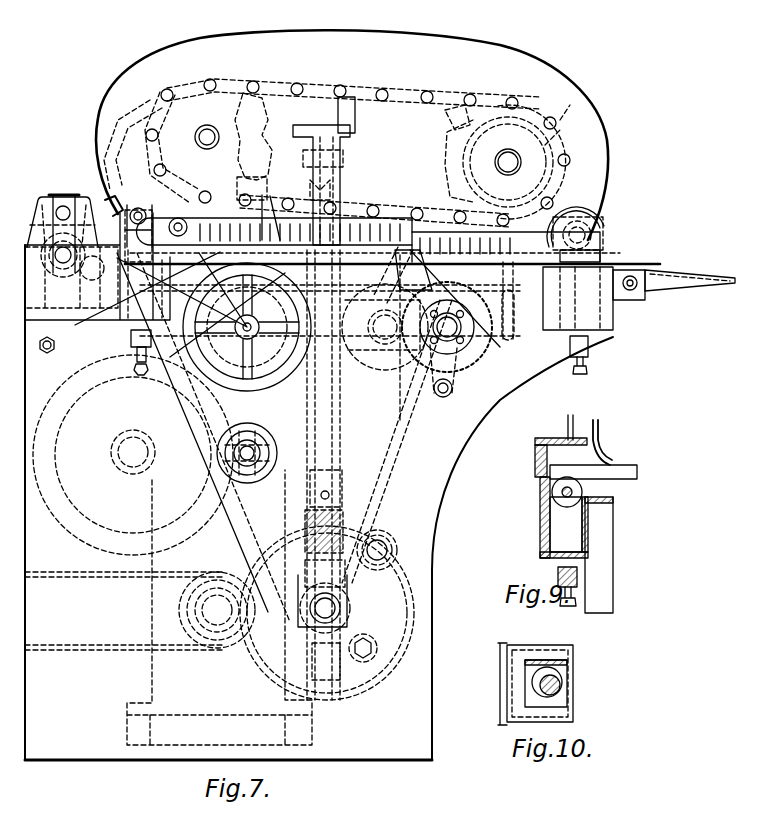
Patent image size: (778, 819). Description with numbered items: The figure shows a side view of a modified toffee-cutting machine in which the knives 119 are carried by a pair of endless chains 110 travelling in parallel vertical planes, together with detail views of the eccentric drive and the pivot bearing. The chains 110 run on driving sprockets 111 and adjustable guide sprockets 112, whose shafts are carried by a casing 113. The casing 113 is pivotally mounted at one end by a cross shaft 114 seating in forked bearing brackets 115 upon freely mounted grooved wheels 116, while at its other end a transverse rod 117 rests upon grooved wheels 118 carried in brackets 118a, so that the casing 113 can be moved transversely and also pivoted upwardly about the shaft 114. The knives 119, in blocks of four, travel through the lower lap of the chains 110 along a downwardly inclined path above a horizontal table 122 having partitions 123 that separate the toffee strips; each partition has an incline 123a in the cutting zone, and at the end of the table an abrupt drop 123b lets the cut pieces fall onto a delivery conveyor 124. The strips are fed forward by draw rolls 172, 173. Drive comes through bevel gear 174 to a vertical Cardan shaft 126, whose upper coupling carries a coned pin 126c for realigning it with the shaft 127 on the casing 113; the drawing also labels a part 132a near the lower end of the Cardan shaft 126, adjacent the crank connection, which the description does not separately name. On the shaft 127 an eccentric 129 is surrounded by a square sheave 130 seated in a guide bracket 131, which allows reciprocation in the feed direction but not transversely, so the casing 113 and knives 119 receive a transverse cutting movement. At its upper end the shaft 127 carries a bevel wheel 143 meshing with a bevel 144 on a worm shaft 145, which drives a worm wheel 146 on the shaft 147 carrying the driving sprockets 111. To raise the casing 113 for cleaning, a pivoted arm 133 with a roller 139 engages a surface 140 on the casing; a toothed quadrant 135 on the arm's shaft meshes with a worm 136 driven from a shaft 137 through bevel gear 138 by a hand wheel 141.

In FIG. 7, the endless chains 110 is at (170, 213).
In FIG. 7, the driving sprockets 111 is at (570, 105).
In FIG. 7, the guide sprockets 112 is at (155, 108).
In FIG. 7, the casing 113 is at (499, 57).
In FIG. 9, the casing 113 is at (568, 425).
In FIG. 7, the cross shaft 114 is at (600, 240).
In FIG. 9, the cross shaft 114 is at (622, 470).
In FIG. 7, the forked bearing brackets 115 is at (592, 222).
In FIG. 9, the forked bearing brackets 115 is at (545, 462).
In FIG. 7, the grooved wheels 116 is at (600, 270).
In FIG. 9, the grooved wheels 116 is at (553, 494).
In FIG. 7, the transverse rod 117 is at (138, 210).
In FIG. 7, the grooved wheels 118 is at (138, 201).
In FIG. 7, the brackets 118a is at (71, 339).
In FIG. 7, the knives 119 is at (275, 240).
In FIG. 7, the horizontal table 122 is at (393, 275).
In FIG. 7, the partitions or ramps 123 is at (265, 240).
In FIG. 7, the incline 123a is at (375, 240).
In FIG. 7, the abrupt drop 123b is at (437, 432).
In FIG. 7, the delivery conveyor 124 is at (665, 275).
In FIG. 7, the vertical Cardan shaft 126 is at (335, 425).
In FIG. 7, the upwardly extending pin 126c is at (335, 192).
In FIG. 7, the shaft 127 is at (335, 178).
In FIG. 10, the shaft 127 is at (560, 686).
In FIG. 10, the eccentric 129 is at (560, 674).
In FIG. 10, the square sheave 130 is at (565, 665).
In FIG. 10, the guide bracket 131 is at (528, 648).
In FIG. 7, the crank pin 132a is at (373, 517).
In FIG. 7, the pivoted arm 133 is at (155, 349).
In FIG. 7, the toothed quadrant 135 is at (335, 355).
In FIG. 7, the worm 136 is at (340, 385).
In FIG. 7, the shaft 137 is at (182, 437).
In FIG. 7, the bevel gear 138 is at (150, 403).
In FIG. 7, the roller 139 is at (190, 217).
In FIG. 7, the surface 140 is at (265, 373).
In FIG. 7, the hand wheel 141 is at (255, 357).
In FIG. 7, the bevel wheel 143 is at (340, 128).
In FIG. 7, the bevel 144 is at (345, 95).
In FIG. 7, the worm shaft 145 is at (455, 100).
In FIG. 7, the worm wheel 146 is at (557, 143).
In FIG. 7, the shaft 147 is at (521, 163).
In FIG. 7, the draw roll 172 is at (62, 197).
In FIG. 7, the draw roll 173 is at (71, 270).
In FIG. 7, the bevel gear 174 is at (367, 587).